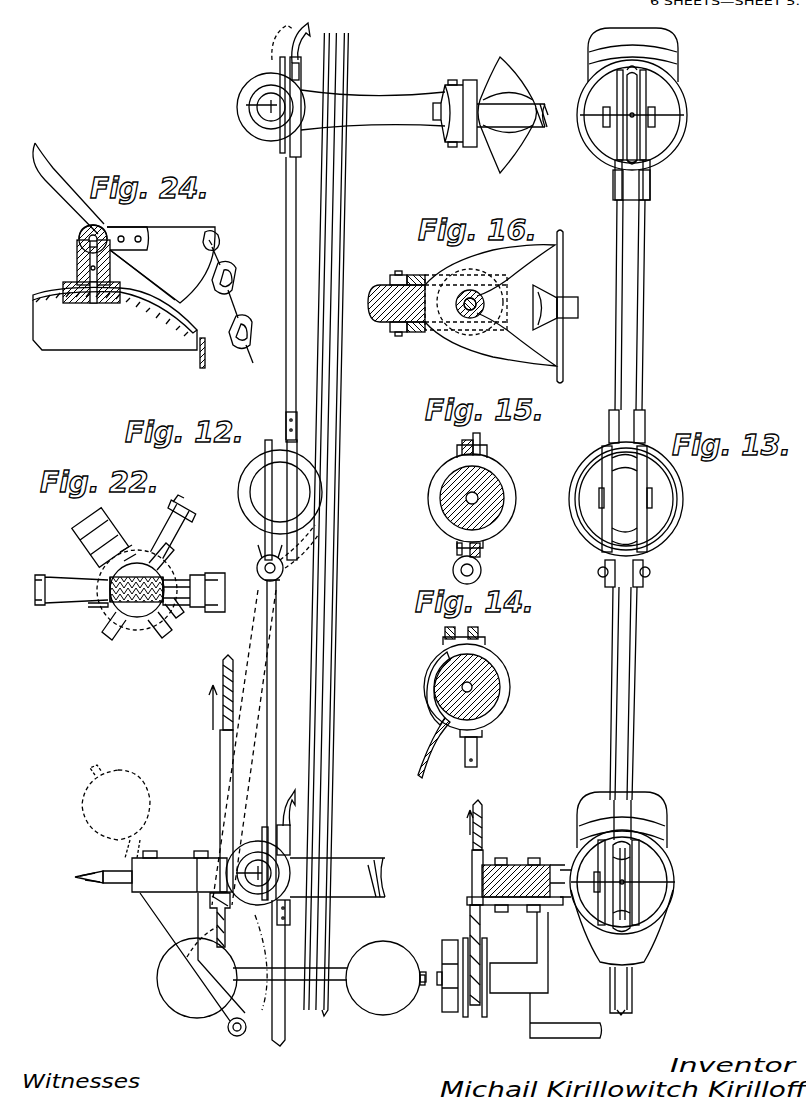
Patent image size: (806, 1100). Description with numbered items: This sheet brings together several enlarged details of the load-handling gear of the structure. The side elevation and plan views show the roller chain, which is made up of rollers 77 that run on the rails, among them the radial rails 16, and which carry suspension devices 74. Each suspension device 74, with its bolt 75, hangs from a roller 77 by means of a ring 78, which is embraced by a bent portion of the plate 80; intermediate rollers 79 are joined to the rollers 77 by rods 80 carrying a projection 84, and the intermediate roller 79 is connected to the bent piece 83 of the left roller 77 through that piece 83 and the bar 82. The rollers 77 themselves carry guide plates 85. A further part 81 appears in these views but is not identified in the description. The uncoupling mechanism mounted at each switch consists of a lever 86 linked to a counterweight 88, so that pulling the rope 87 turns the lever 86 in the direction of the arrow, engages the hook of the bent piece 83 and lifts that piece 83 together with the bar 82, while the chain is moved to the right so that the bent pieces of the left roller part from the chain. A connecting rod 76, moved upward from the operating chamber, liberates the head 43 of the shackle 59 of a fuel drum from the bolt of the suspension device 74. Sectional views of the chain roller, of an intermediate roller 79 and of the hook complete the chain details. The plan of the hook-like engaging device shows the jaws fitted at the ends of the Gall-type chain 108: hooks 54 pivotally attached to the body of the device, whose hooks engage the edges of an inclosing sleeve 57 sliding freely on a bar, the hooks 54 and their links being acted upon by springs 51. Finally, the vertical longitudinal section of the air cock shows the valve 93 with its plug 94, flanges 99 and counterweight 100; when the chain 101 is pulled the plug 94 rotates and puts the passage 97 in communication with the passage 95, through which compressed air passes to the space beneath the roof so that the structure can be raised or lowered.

In FIG. 12, the radial rails 16 is at (336, 218).
In FIG. 13, the radial rails 16 is at (647, 340).
In FIG. 12, the head 43 is at (470, 80).
In FIG. 22, the springs 51 is at (168, 530).
In FIG. 22, the hooks 54 is at (80, 530).
In FIG. 22, the inclosing sleeve 57 is at (172, 560).
In FIG. 12, the shackle 59 is at (520, 130).
In FIG. 16, the shackle 59 is at (458, 315).
In FIG. 12, the suspension device 74 is at (365, 103).
In FIG. 16, the suspension device 74 is at (380, 288).
In FIG. 12, the bolt 75 is at (452, 80).
In FIG. 16, the bolt 75 is at (570, 300).
In FIG. 16, the connecting rod 76 is at (566, 248).
In FIG. 12, the rollers 77 is at (252, 100).
In FIG. 14, the rollers 77 is at (492, 680).
In FIG. 13, the rollers 77 is at (640, 115).
In FIG. 12, the ring 78 is at (283, 133).
In FIG. 12, the intermediate rollers 79 is at (240, 490).
In FIG. 15, the intermediate rollers 79 is at (498, 492).
In FIG. 12, the rods 80 is at (294, 150).
In FIG. 15, the rods 80 is at (487, 450).
In FIG. 14, the rods 80 is at (482, 733).
In FIG. 13, the rods 80 is at (680, 140).
In FIG. 12, the pivot hub 81 is at (258, 555).
In FIG. 15, the pivot hub 81 is at (458, 548).
In FIG. 13, the pivot hub 81 is at (683, 503).
In FIG. 12, the bar 82 is at (272, 700).
In FIG. 13, the bar 82 is at (647, 683).
In FIG. 12, the bent piece 83 is at (266, 827).
In FIG. 14, the bent piece 83 is at (445, 630).
In FIG. 13, the bent piece 83 is at (670, 860).
In FIG. 12, the projection 84 is at (311, 28).
In FIG. 13, the projection 84 is at (672, 50).
In FIG. 12, the guide plates 85 is at (262, 82).
In FIG. 14, the guide plates 85 is at (430, 653).
In FIG. 13, the guide plates 85 is at (628, 160).
In FIG. 12, the lever 86 is at (237, 1036).
In FIG. 13, the lever 86 is at (540, 1000).
In FIG. 12, the rope 87 is at (222, 665).
In FIG. 13, the rope 87 is at (483, 815).
In FIG. 12, the counterweight 88 is at (383, 1005).
In FIG. 13, the counterweight 88 is at (448, 940).
In FIG. 24, the valve 93 is at (77, 262).
In FIG. 24, the plug 94 is at (110, 222).
In FIG. 24, the passage 95 is at (79, 236).
In FIG. 24, the passage 97 is at (95, 303).
In FIG. 24, the flanges 99 is at (140, 237).
In FIG. 24, the counterweight 100 is at (190, 235).
In FIG. 24, the chain 101 is at (232, 272).
In FIG. 22, the chain 108 is at (140, 605).